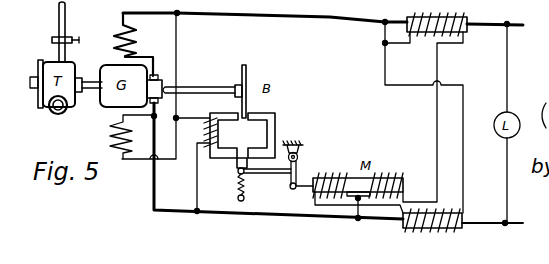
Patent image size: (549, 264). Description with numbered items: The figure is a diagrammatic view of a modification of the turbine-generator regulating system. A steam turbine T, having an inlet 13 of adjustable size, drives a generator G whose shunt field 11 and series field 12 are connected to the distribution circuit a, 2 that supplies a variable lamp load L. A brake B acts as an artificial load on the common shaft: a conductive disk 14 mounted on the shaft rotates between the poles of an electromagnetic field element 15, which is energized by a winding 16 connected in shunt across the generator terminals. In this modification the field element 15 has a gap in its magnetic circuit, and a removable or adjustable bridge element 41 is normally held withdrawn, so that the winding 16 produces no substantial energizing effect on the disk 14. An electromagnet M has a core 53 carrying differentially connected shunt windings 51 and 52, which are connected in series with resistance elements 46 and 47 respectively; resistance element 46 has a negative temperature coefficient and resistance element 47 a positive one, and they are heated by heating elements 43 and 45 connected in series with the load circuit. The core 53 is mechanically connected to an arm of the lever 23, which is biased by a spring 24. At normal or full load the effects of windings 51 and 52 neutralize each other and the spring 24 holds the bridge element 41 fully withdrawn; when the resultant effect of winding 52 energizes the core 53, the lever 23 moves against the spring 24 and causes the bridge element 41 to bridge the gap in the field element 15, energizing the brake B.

The distribution circuit conductor a is at (297, 17).
The return conductor 2 is at (255, 214).
The shunt field 11 is at (119, 128).
The series field 12 is at (118, 37).
The inlet 13 is at (69, 13).
The disk 14 is at (247, 73).
The field element 15 is at (242, 135).
The winding 16 is at (209, 139).
The lever 23 is at (271, 173).
The spring 24 is at (233, 182).
The bridge element 41 is at (237, 163).
The heating element 43 is at (463, 218).
The heating element 45 is at (467, 25).
The resistance element 46 is at (403, 226).
The resistance element 47 is at (424, 34).
The shunt energizing winding 51 is at (398, 180).
The shunt energizing winding 52 is at (336, 178).
The core 53 is at (313, 190).